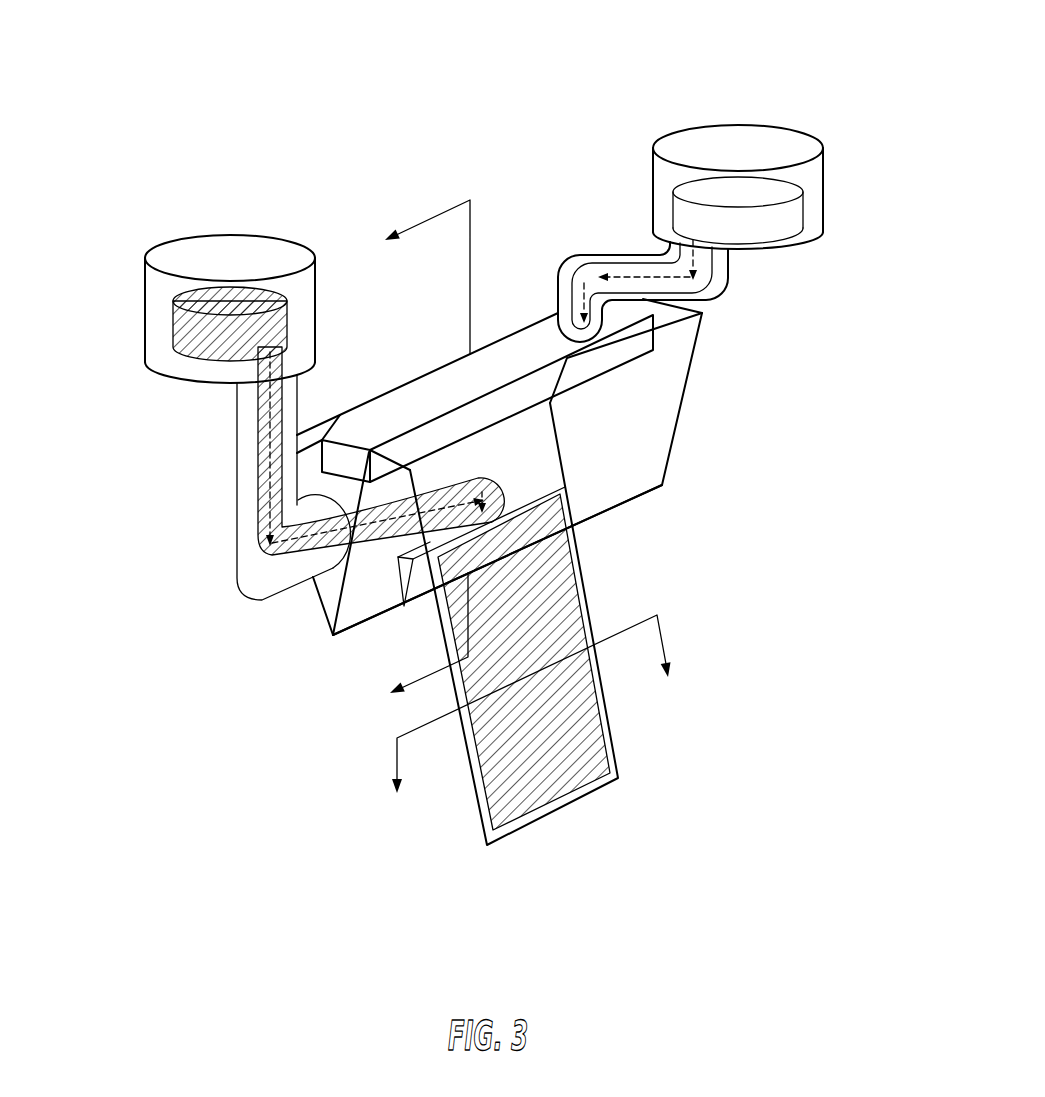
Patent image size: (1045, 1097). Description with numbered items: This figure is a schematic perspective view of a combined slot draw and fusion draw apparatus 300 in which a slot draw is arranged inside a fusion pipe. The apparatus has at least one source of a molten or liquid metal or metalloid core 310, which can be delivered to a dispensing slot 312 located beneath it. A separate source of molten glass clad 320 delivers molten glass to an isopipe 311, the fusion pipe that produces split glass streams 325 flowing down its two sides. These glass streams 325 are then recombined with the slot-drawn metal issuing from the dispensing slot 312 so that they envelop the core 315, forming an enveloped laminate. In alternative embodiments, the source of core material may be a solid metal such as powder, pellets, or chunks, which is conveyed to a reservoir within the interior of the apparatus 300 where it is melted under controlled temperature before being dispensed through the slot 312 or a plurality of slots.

The combined slot draw and fusion draw apparatus 300 is at (383, 82).
The source of molten or liquid metal or metalloid core 310 is at (146, 320).
The source of molten glass clad 320 is at (826, 196).
The isopipe 311 is at (630, 354).
The dispensing slot 312 is at (610, 514).
The core 315 is at (588, 762).
The split glass streams 325 is at (610, 705).